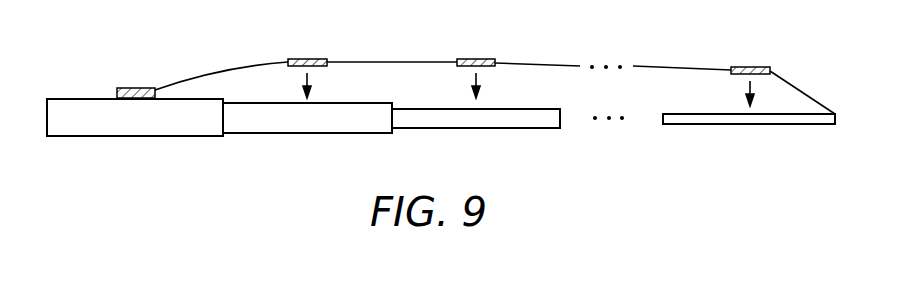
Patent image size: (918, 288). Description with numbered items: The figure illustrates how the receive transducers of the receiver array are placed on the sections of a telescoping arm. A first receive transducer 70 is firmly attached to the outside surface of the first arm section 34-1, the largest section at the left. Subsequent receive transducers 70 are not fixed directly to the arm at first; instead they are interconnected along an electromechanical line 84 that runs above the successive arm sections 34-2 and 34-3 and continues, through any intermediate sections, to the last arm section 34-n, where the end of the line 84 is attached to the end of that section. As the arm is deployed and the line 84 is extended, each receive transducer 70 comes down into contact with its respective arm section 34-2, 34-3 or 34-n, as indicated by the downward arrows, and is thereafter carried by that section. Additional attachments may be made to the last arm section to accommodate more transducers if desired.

The receive transducer 70 is at (137, 86).
The electromechanical line 84 is at (225, 70).
The first arm section 34-1 is at (172, 135).
The arm section 34-2 is at (273, 132).
The arm section 34-3 is at (460, 127).
The last arm section 34-n is at (720, 123).